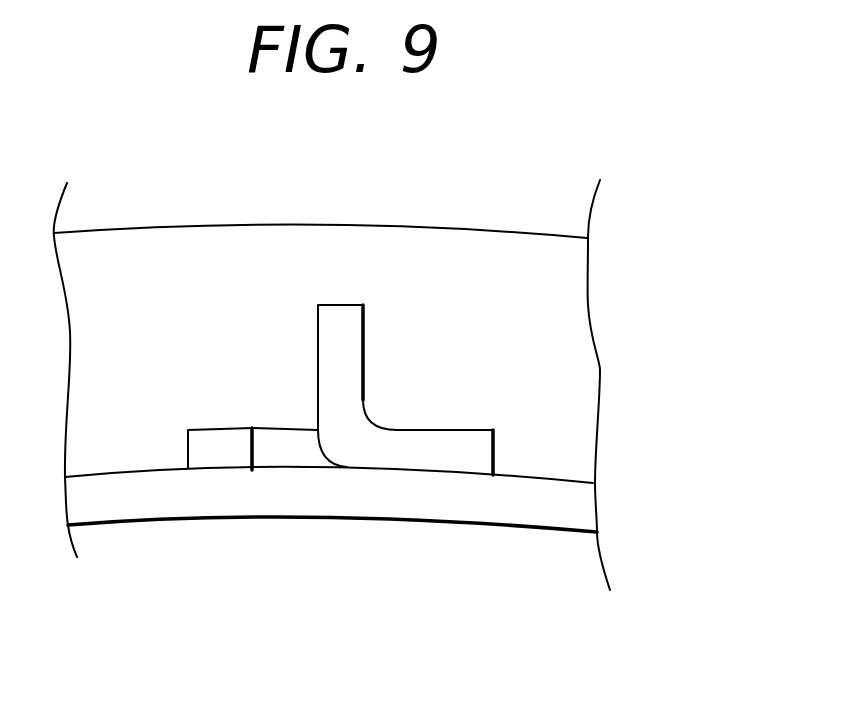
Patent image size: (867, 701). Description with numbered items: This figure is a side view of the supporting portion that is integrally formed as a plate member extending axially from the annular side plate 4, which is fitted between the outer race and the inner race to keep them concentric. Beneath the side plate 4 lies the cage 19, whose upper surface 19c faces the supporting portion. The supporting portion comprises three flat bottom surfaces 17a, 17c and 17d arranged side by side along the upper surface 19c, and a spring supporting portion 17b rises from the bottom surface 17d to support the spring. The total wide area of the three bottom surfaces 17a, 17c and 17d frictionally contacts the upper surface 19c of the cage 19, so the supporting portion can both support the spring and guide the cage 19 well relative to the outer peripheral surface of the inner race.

The side plate 4 is at (535, 302).
The cage 19 is at (328, 492).
The upper surface of the cage 19c is at (543, 478).
The bottom surface 17a is at (207, 462).
The spring supporting portion 17b is at (340, 325).
The bottom surface 17c is at (280, 435).
The bottom surface 17d is at (450, 455).